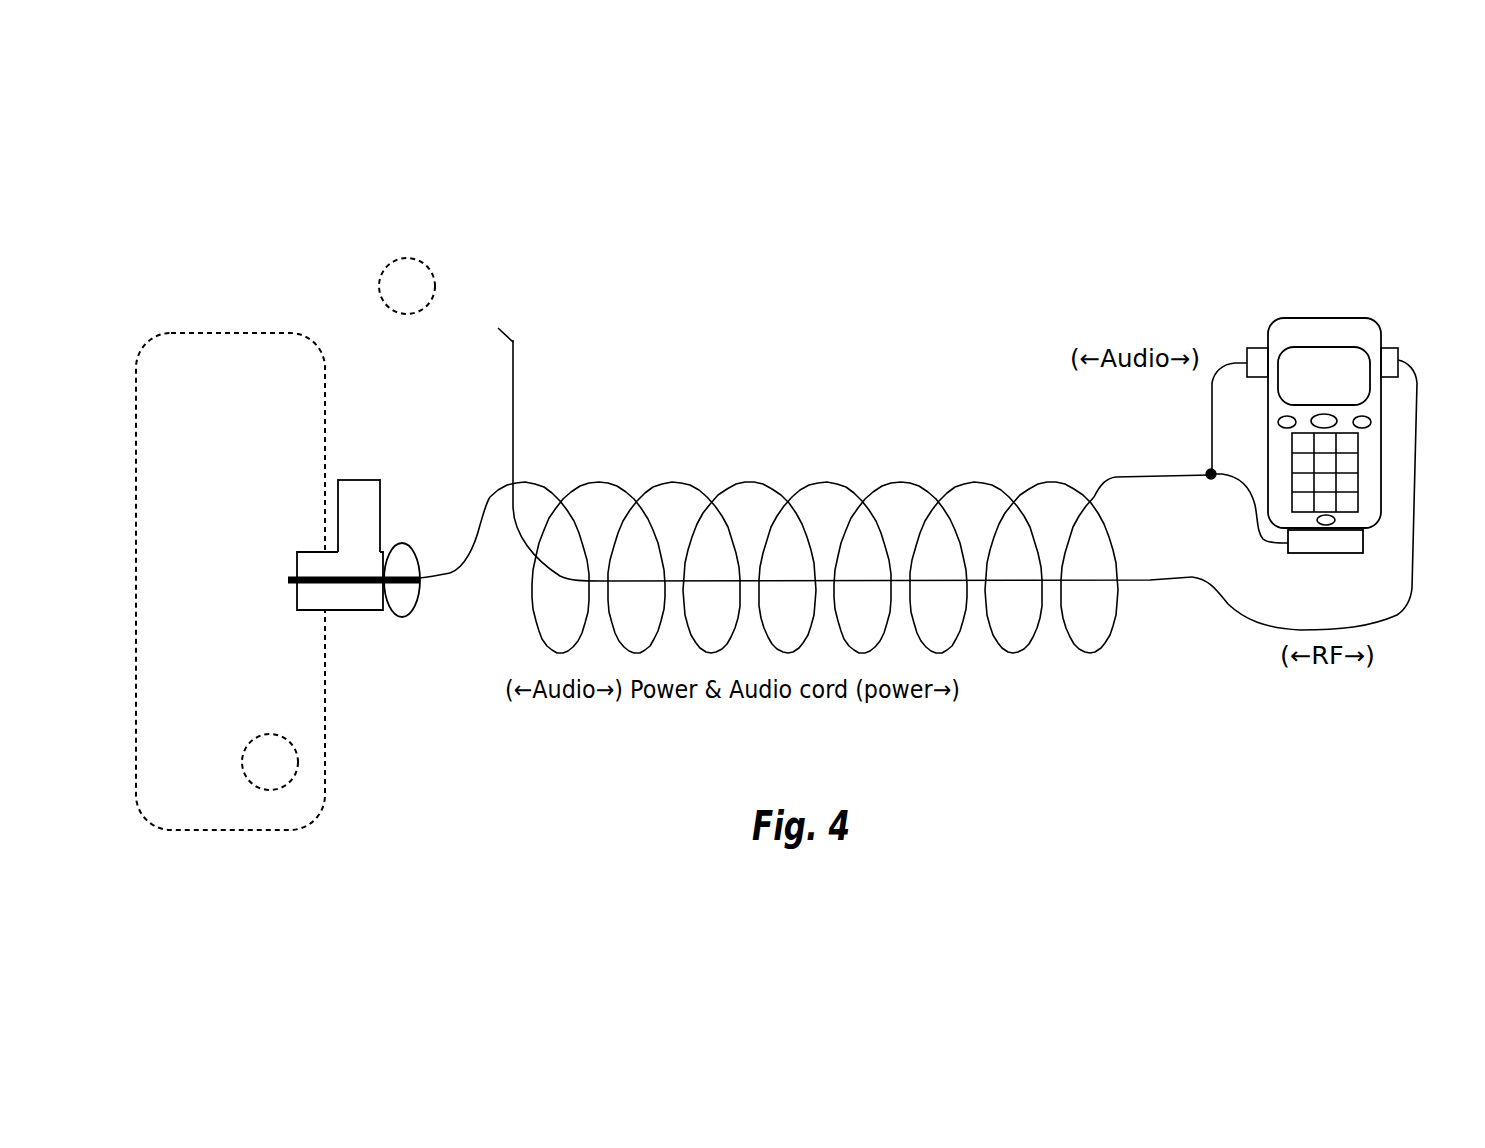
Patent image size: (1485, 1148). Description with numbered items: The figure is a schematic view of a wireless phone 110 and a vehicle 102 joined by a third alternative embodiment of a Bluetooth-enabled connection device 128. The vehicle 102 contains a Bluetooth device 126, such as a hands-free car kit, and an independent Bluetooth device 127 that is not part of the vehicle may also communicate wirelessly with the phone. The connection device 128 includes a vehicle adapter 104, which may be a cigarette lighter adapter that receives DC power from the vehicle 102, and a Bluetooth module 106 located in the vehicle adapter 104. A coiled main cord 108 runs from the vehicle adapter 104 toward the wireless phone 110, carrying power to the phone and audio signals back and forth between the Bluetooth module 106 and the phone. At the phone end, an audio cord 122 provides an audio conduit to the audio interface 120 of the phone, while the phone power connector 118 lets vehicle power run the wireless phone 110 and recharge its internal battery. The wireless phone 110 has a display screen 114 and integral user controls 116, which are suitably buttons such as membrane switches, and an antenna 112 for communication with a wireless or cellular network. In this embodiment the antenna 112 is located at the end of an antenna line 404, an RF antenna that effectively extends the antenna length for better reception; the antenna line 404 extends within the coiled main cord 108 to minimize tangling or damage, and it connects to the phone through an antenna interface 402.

The vehicle 102 is at (228, 333).
The vehicle adapter 104 is at (346, 610).
The Bluetooth module 106 is at (360, 480).
The main cord 108 is at (675, 480).
The wireless phone 110 is at (1323, 310).
The antenna 112 is at (513, 342).
The display screen 114 is at (1333, 347).
The integral user controls 116 is at (1362, 470).
The phone power connector 118 is at (1350, 555).
The audio interface 120 is at (1258, 347).
The audio cord 122 is at (1210, 405).
The Bluetooth device 126 is at (290, 757).
The independent Bluetooth device 127 is at (407, 259).
The connection device 128 is at (852, 482).
The antenna interface 402 is at (1393, 350).
The antenna line 404 is at (1411, 605).